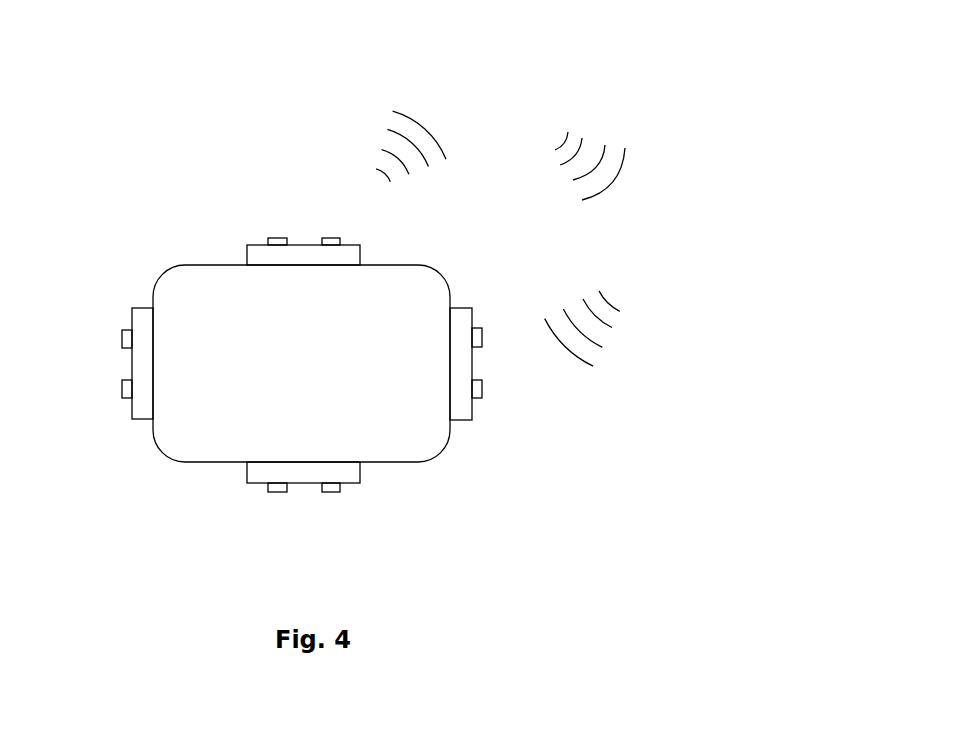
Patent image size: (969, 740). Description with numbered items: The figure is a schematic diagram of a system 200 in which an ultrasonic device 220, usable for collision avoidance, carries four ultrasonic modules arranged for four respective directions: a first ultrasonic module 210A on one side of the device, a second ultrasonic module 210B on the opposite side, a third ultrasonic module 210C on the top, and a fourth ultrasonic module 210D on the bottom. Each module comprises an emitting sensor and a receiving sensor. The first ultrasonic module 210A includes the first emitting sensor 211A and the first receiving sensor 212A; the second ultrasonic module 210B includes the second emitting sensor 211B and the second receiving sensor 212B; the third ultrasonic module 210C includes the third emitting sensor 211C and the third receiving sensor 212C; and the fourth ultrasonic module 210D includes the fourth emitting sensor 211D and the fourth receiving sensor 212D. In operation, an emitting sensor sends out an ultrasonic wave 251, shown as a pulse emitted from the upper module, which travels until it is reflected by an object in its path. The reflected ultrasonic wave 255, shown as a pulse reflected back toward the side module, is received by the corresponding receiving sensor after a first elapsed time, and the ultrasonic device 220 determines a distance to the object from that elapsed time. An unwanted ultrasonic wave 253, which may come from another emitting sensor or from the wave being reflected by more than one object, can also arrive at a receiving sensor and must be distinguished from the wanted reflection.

The system 200 is at (789, 36).
The ultrasonic device 220 is at (301, 363).
The first ultrasonic module 210A is at (463, 420).
The second ultrasonic module 210B is at (142, 420).
The third ultrasonic module 210C is at (247, 252).
The fourth ultrasonic module 210D is at (361, 470).
The first emitting sensor 211A is at (482, 338).
The second emitting sensor 211B is at (122, 390).
The third emitting sensor 211C is at (277, 238).
The fourth emitting sensor 211D is at (331, 492).
The first receiving sensor 212A is at (482, 390).
The second receiving sensor 212B is at (122, 338).
The third receiving sensor 212C is at (333, 238).
The fourth receiving sensor 212D is at (278, 492).
The ultrasonic wave 251 is at (415, 110).
The unwanted ultrasonic wave 253 is at (607, 122).
The reflected ultrasonic wave 255 is at (617, 300).